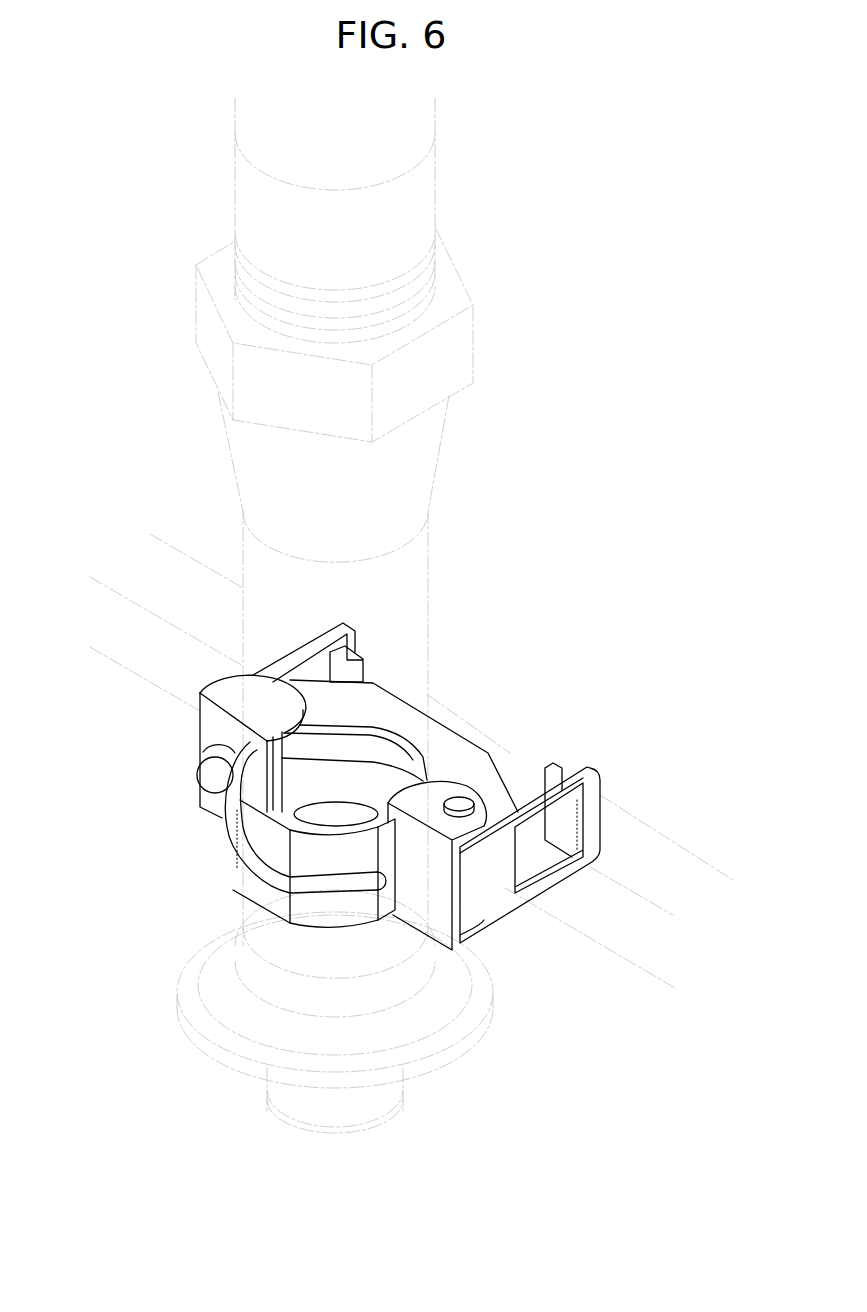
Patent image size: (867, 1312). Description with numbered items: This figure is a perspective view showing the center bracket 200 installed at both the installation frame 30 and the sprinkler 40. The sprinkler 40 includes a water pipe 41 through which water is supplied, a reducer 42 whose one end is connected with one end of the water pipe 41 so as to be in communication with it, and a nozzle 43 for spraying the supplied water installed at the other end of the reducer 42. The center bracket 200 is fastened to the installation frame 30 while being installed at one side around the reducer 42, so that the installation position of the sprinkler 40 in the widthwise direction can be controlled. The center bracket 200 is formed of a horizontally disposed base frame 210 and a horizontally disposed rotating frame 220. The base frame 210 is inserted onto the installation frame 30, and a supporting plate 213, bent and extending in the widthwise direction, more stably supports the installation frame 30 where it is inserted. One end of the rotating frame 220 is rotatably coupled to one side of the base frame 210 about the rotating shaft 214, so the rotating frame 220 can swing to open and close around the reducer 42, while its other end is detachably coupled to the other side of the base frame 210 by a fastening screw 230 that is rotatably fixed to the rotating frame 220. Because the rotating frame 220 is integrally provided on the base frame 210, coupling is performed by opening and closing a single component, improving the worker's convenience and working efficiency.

The installation frame 30 is at (655, 833).
The sprinkler 40 is at (329, 633).
The water pipe 41 is at (435, 173).
The reducer 42 is at (427, 582).
The nozzle 43 is at (273, 1097).
The center bracket 200 is at (363, 786).
The base frame 210 is at (450, 743).
The supporting plate 213 is at (563, 772).
The rotating shaft 214 is at (465, 805).
The rotating frame 220 is at (230, 880).
The fastening screw 230 is at (200, 770).